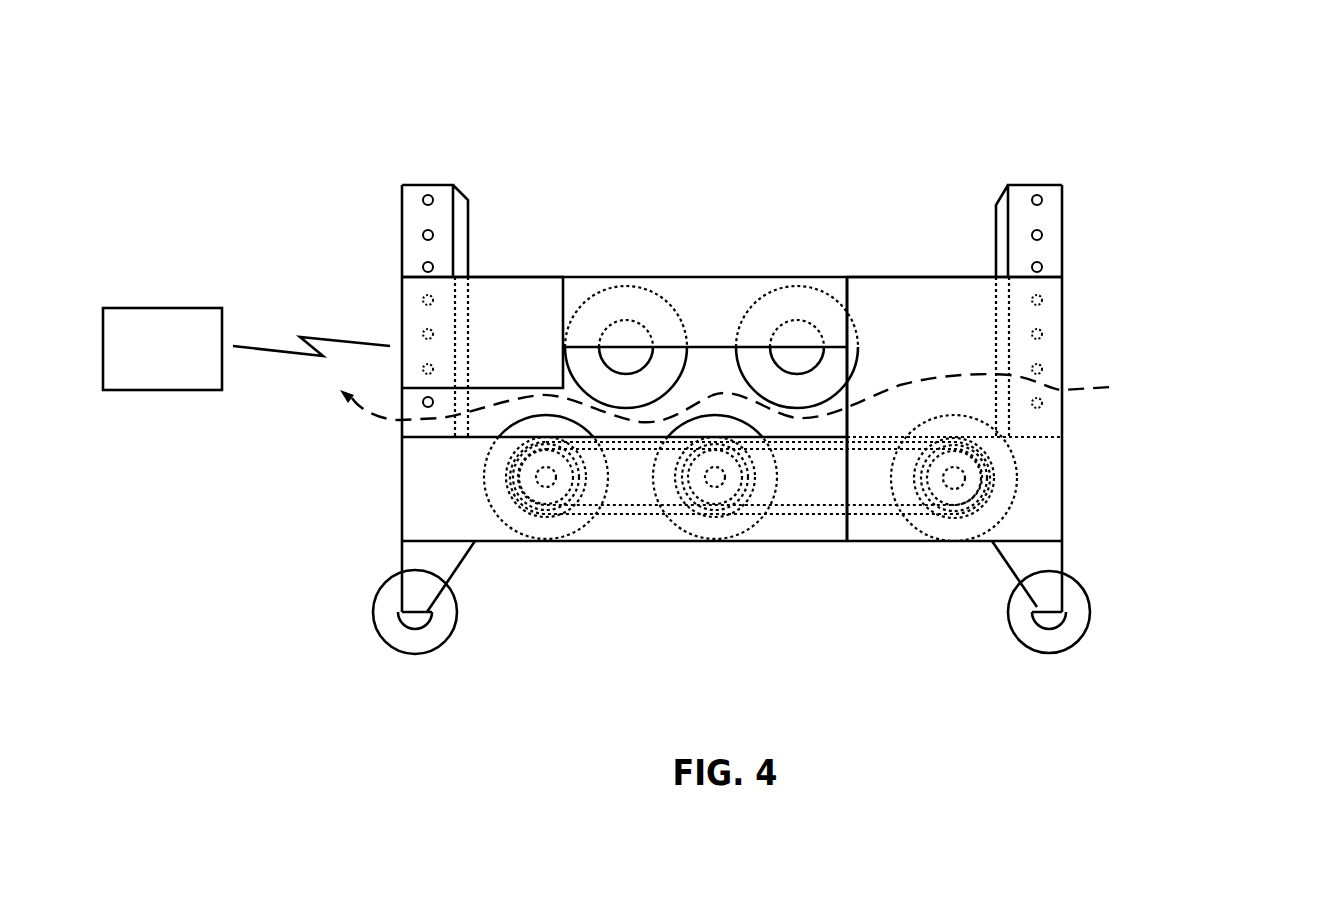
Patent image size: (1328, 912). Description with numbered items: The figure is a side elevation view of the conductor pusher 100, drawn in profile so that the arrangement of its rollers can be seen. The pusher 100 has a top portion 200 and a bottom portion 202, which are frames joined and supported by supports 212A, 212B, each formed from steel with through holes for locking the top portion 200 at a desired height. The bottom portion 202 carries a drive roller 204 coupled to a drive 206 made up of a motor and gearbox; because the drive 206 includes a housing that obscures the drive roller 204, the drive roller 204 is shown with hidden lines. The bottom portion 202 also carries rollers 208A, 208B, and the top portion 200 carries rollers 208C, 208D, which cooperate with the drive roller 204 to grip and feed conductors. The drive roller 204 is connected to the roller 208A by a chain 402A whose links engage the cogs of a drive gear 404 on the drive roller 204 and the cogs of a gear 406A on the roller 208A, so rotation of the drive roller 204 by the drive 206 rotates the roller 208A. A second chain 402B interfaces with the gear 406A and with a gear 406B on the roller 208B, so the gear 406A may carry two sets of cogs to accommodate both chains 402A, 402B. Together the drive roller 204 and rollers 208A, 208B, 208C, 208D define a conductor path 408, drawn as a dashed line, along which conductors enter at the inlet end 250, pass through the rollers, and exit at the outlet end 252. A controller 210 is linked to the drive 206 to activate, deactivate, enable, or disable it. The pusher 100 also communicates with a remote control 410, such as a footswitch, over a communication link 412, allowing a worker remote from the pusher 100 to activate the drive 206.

The pusher 100 is at (962, 70).
The top portion 200 is at (576, 277).
The bottom portion 202 is at (402, 500).
The drive roller 204 is at (1003, 483).
The drive 206 is at (954, 409).
The roller 208A is at (667, 497).
The roller 208B is at (592, 497).
The roller 208C is at (752, 330).
The roller 208D is at (678, 330).
The controller 210 is at (482, 332).
The support 212A is at (1058, 190).
The support 212B is at (402, 187).
The inlet end 250 is at (1213, 220).
The outlet end 252 is at (322, 290).
The chain 402A is at (780, 517).
The second chain 402B is at (537, 511).
The drive gear 404 is at (954, 495).
The gear 406A is at (712, 525).
The gear 406B is at (507, 503).
The conductor path 408 is at (745, 393).
The remote control 410 is at (137, 392).
The communication link 412 is at (280, 357).